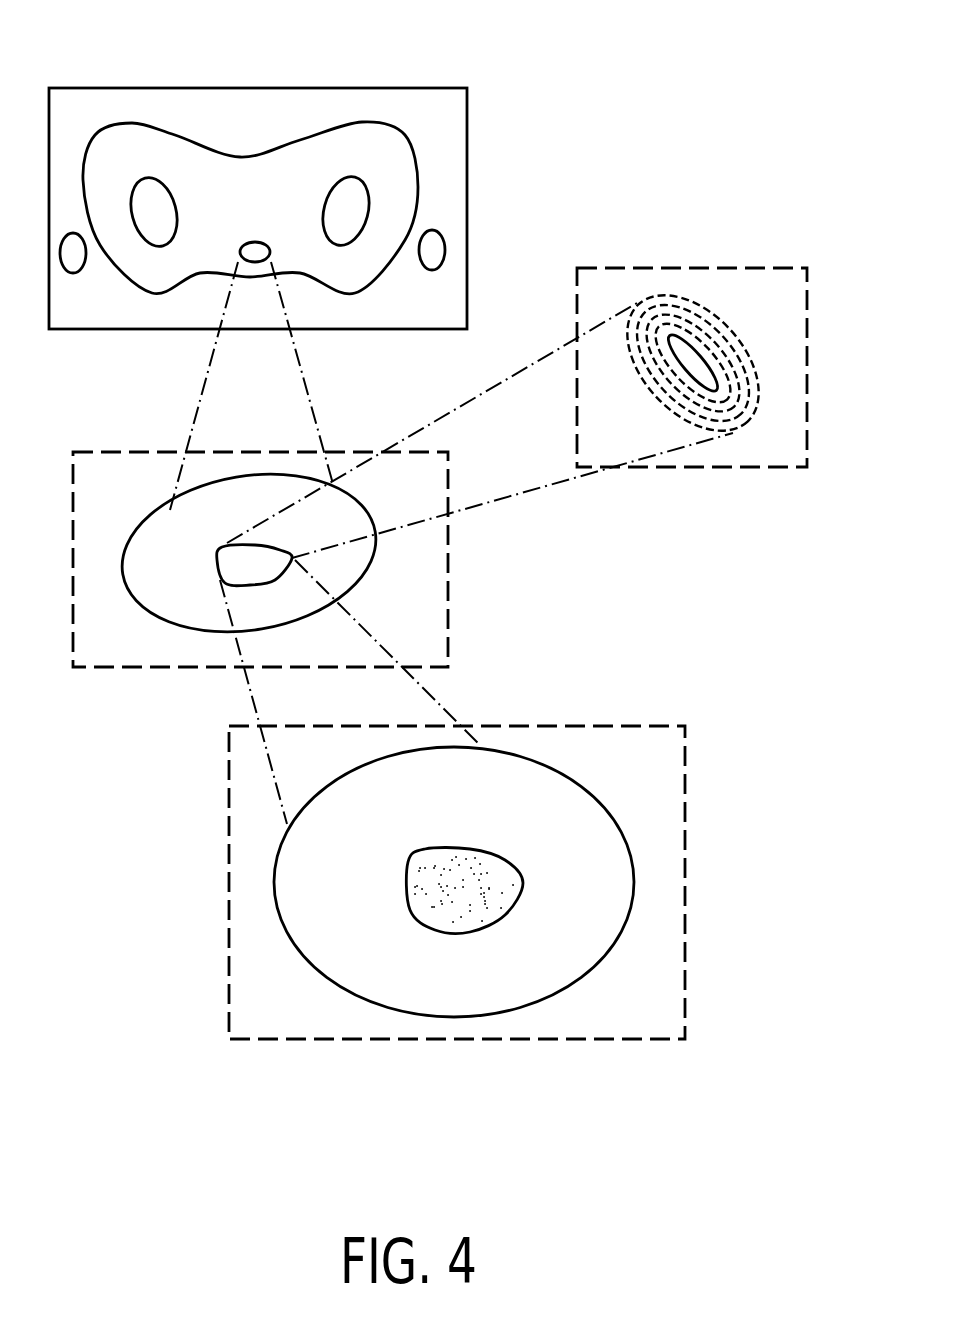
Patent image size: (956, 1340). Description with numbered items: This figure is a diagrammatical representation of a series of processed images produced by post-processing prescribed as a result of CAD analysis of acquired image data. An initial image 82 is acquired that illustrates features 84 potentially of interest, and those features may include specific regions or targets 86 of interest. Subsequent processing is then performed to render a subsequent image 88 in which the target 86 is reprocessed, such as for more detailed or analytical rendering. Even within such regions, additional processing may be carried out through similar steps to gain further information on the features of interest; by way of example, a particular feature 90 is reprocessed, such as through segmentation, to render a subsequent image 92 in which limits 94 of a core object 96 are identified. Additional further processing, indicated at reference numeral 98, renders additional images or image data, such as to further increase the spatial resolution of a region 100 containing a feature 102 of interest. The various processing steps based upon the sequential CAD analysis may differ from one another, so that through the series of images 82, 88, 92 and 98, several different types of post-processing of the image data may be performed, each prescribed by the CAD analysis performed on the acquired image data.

The initial image 82 is at (410, 88).
The features 84 is at (417, 153).
The target 86 is at (255, 247).
The subsequent image 88 is at (133, 452).
The feature 90 is at (242, 561).
The subsequent image 92 is at (627, 267).
The limits 94 is at (720, 323).
The core object 96 is at (693, 358).
The additional further processing 98 is at (229, 798).
The region 100 is at (523, 883).
The feature of interest 102 is at (488, 906).